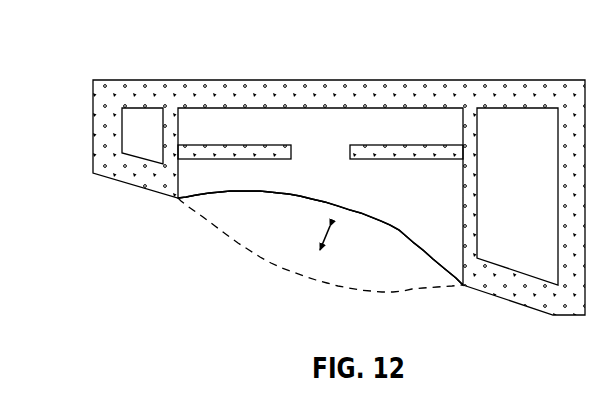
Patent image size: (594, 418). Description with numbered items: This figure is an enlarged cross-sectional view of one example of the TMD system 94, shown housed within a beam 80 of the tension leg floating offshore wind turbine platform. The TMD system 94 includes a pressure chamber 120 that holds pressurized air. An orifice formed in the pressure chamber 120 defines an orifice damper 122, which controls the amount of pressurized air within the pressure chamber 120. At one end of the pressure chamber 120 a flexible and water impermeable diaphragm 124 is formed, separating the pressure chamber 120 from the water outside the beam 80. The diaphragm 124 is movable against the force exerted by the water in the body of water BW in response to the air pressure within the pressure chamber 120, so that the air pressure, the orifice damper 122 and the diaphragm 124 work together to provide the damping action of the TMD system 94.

The beam 80 is at (557, 87).
The TMD system 94 is at (309, 50).
The pressure chamber 120 is at (412, 128).
The orifice damper 122 is at (291, 148).
The diaphragm 124 is at (423, 250).
The body of water BW is at (320, 250).